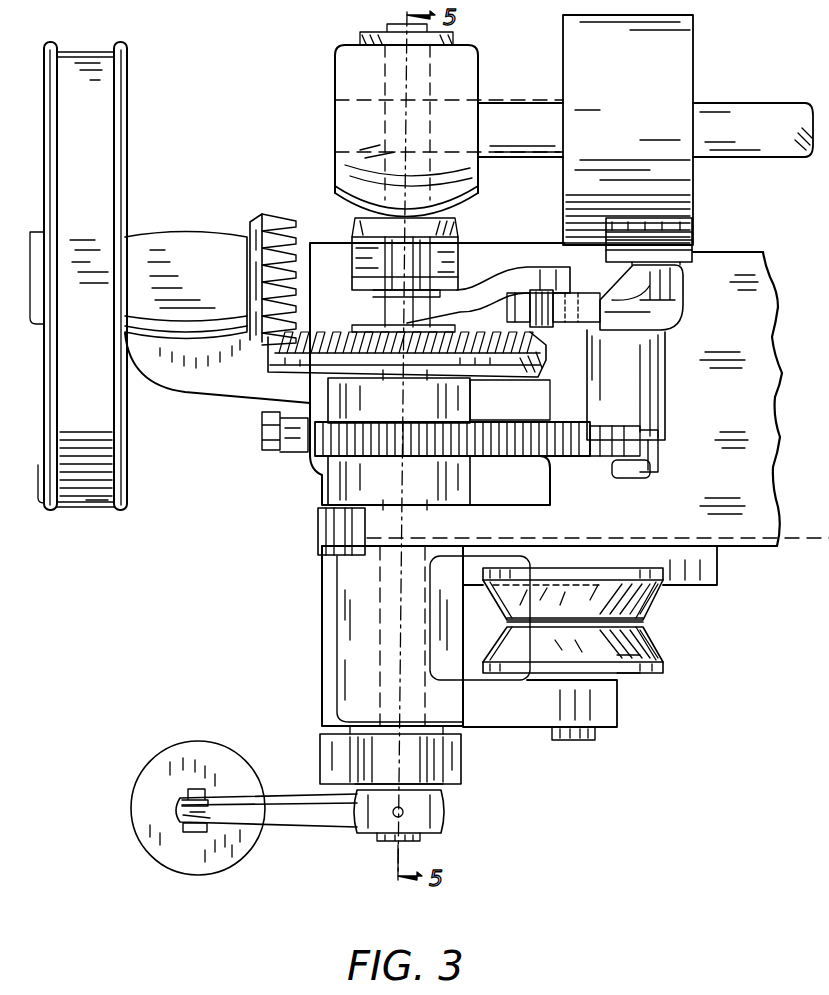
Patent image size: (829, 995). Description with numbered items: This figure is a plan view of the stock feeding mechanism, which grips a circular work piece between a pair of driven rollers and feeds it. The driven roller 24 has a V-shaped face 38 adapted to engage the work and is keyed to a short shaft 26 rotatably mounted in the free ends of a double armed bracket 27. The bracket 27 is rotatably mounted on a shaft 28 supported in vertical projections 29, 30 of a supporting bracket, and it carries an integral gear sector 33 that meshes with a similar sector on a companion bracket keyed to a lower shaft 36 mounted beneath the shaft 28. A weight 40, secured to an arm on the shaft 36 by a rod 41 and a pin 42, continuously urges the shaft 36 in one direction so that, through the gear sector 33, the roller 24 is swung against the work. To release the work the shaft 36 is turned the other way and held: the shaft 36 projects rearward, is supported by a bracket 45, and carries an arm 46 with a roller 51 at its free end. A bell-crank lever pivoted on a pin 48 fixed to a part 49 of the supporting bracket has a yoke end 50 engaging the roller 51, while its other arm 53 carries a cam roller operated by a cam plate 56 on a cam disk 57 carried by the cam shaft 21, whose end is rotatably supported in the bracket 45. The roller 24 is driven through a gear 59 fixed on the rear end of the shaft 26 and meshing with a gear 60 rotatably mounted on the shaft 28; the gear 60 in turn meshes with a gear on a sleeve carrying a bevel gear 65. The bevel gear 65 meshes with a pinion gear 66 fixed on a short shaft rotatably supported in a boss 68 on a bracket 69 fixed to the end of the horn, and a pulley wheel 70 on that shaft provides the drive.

The cam shaft 21 is at (725, 118).
The driven roller 24 is at (620, 675).
The short shaft 26 is at (590, 738).
The double armed bracket 27 is at (520, 722).
The shaft 28 is at (420, 260).
The vertical projection 29 is at (470, 397).
The vertical projection 30 is at (460, 486).
The gear sector 33 is at (318, 538).
The shaft 36 is at (410, 842).
The V-shaped face 38 is at (645, 640).
The weight 40 is at (226, 860).
The rod 41 is at (180, 810).
The pin 42 is at (205, 795).
The bracket 45 is at (352, 250).
The arm 46 is at (488, 283).
The pin 48 is at (630, 476).
The part of bracket 49 is at (645, 392).
The yoke end 50 is at (510, 308).
The roller 51 is at (540, 327).
The arm of bell-crank lever 53 is at (670, 312).
The cam plate 56 is at (685, 228).
The cam disk 57 is at (690, 178).
The gear 59 is at (655, 450).
The gear 60 is at (318, 440).
The bevel gear 65 is at (538, 360).
The pinion gear 66 is at (268, 220).
The boss 68 is at (188, 235).
The bracket 69 is at (208, 382).
The pulley wheel 70 is at (86, 62).